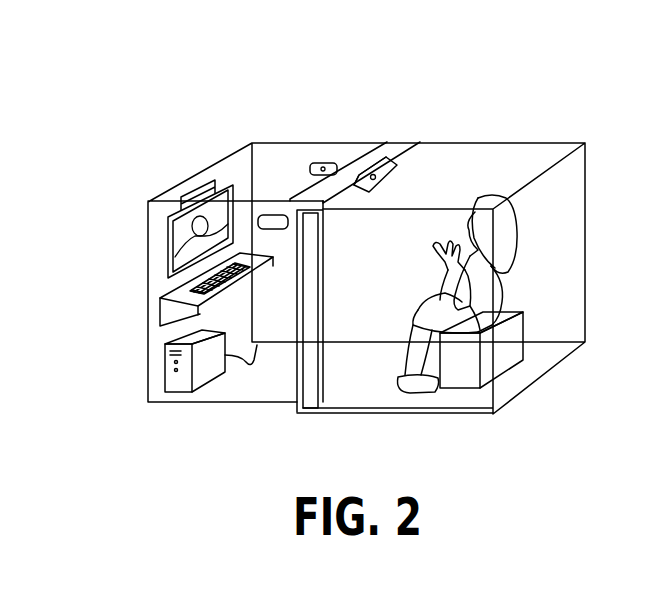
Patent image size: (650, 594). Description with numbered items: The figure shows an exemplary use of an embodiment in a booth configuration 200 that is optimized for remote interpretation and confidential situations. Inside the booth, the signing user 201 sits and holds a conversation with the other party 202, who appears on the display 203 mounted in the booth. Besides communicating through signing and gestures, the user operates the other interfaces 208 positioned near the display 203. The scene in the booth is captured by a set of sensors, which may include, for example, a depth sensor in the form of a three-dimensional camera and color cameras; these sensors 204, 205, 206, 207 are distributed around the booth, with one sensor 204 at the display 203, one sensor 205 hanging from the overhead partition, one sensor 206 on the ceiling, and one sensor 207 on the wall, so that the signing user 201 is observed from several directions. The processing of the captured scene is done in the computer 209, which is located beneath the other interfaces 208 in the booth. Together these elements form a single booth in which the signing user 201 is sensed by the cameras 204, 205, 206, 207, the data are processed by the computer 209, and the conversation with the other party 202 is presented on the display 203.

The telepresence environment 200 is at (200, 125).
The signing user 201 is at (437, 283).
The other party 202 is at (172, 245).
The display 203 is at (170, 227).
The sensor 204 is at (200, 196).
The sensor 205 is at (397, 172).
The sensor 206 is at (328, 163).
The sensor 207 is at (273, 215).
The other interfaces 208 is at (160, 299).
The computer 209 is at (207, 370).